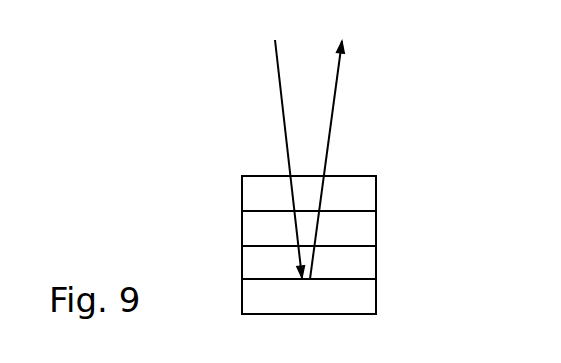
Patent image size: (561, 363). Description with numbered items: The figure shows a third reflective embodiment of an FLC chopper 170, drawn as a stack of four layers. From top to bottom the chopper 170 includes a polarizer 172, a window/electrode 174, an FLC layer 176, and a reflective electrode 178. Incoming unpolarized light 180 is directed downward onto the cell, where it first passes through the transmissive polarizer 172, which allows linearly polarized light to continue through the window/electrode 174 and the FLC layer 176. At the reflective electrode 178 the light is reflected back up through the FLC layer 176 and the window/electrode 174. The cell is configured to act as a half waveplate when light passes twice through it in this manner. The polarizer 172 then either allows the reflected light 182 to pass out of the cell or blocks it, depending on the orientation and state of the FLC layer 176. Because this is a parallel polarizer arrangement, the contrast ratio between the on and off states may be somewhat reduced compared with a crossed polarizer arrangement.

The FLC chopper 170 is at (199, 206).
The polarizer 172 is at (361, 193).
The window/electrode 174 is at (361, 228).
The FLC layer 176 is at (358, 262).
The reflective electrode 178 is at (360, 298).
The incoming unpolarized light 180 is at (279, 79).
The reflected light 182 is at (331, 127).